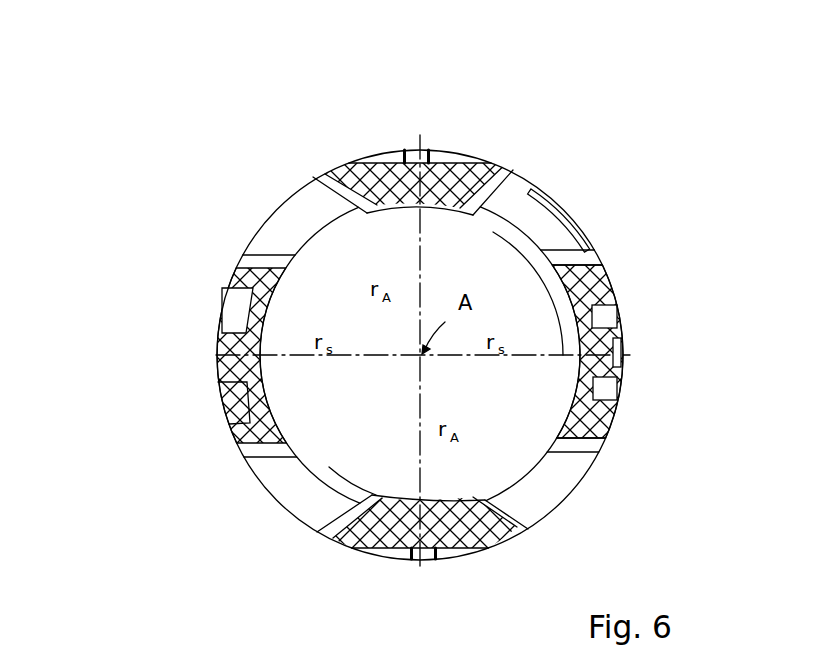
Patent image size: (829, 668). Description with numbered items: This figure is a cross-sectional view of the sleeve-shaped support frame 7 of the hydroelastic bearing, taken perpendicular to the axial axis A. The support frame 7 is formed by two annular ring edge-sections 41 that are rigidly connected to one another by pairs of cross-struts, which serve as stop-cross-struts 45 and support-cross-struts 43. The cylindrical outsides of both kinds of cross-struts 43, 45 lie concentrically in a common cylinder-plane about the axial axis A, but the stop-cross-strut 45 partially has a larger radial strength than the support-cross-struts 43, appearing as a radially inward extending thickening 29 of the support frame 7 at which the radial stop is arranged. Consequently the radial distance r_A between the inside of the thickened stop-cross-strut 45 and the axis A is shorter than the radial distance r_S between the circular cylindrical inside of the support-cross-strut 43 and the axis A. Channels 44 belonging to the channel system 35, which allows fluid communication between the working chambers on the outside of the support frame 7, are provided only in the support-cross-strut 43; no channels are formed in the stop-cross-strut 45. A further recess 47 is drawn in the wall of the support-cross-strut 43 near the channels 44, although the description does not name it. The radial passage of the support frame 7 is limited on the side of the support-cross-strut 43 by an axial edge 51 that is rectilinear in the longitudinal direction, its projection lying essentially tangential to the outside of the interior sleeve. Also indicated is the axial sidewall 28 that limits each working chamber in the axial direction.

The support frame 7 is at (371, 148).
The axial sidewall 28 is at (531, 174).
The thickening 29 is at (455, 198).
The channel system 35 is at (212, 328).
The ring edge-section 41 is at (282, 221).
The support-cross-strut 43 is at (615, 423).
The channel 44 is at (605, 388).
The stop-cross-strut 45 is at (471, 152).
The recess 47 is at (605, 317).
The axial edge 51 is at (598, 252).